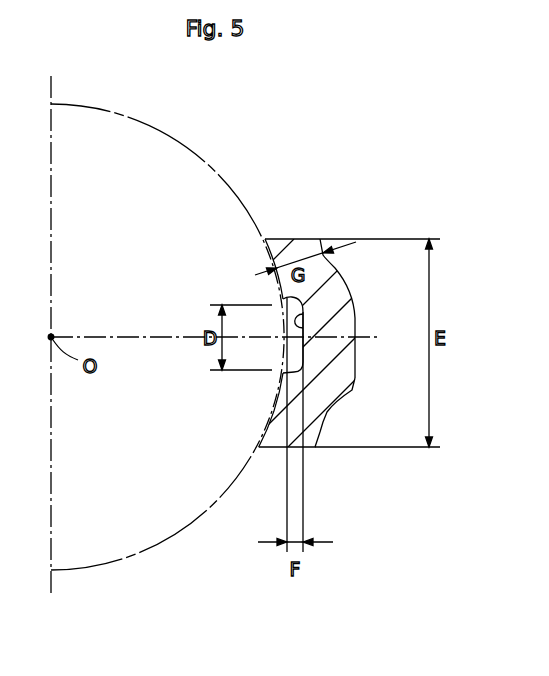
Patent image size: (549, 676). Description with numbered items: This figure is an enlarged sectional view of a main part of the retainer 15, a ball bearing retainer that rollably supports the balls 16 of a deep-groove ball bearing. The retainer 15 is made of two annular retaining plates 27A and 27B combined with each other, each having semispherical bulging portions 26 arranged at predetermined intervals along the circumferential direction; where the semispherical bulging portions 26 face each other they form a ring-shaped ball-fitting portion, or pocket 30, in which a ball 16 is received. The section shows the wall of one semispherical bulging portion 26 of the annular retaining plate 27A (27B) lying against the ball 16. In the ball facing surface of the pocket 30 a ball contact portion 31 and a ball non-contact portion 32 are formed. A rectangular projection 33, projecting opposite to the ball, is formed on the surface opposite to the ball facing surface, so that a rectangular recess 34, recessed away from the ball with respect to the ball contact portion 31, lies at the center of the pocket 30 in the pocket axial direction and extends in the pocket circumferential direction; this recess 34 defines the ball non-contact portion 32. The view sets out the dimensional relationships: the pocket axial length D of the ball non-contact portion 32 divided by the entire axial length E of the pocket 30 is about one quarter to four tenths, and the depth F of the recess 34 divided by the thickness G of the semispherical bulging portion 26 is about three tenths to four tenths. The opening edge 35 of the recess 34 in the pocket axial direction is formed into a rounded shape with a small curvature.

The retainer 15 is at (291, 376).
The ball 16 is at (141, 167).
The semispherical bulging portion 26 is at (343, 393).
The annular retaining plate 27A is at (346, 477).
The annular retaining plate 27B is at (323, 428).
The ball-fitting portion 30 is at (266, 421).
The ball contact portion 31 is at (276, 269).
The ball non-contact portion 32 is at (286, 344).
The rectangular projection 33 is at (357, 352).
The rectangular recess 34 is at (354, 304).
The opening edge 35 is at (283, 301).